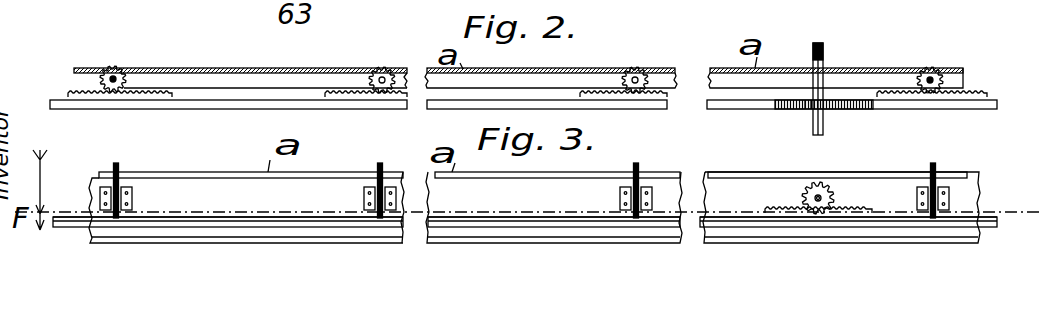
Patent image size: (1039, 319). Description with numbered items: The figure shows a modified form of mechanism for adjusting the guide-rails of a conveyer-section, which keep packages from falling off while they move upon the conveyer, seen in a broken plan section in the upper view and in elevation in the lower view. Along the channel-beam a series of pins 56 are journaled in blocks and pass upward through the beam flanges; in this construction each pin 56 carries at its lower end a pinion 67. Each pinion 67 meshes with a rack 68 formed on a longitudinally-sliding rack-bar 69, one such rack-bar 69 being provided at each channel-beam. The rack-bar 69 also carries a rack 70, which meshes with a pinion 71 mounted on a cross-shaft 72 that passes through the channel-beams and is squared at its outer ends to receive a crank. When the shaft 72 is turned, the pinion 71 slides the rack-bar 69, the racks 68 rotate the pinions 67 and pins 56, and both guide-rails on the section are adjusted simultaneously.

In FIG. 2, the pins 56 is at (125, 72).
In FIG. 3, the pins 56 is at (118, 170).
In FIG. 2, the pinion 67 is at (108, 67).
In FIG. 2, the rack 68 is at (128, 96).
In FIG. 2, the rack-bar 69 is at (260, 103).
In FIG. 3, the rack-bar 69 is at (230, 228).
In FIG. 2, the rack 70 is at (783, 109).
In FIG. 3, the rack 70 is at (790, 210).
In FIG. 2, the pinion 71 is at (808, 110).
In FIG. 3, the pinion 71 is at (815, 194).
In FIG. 2, the cross-shaft 72 is at (823, 125).
In FIG. 3, the cross-shaft 72 is at (822, 190).